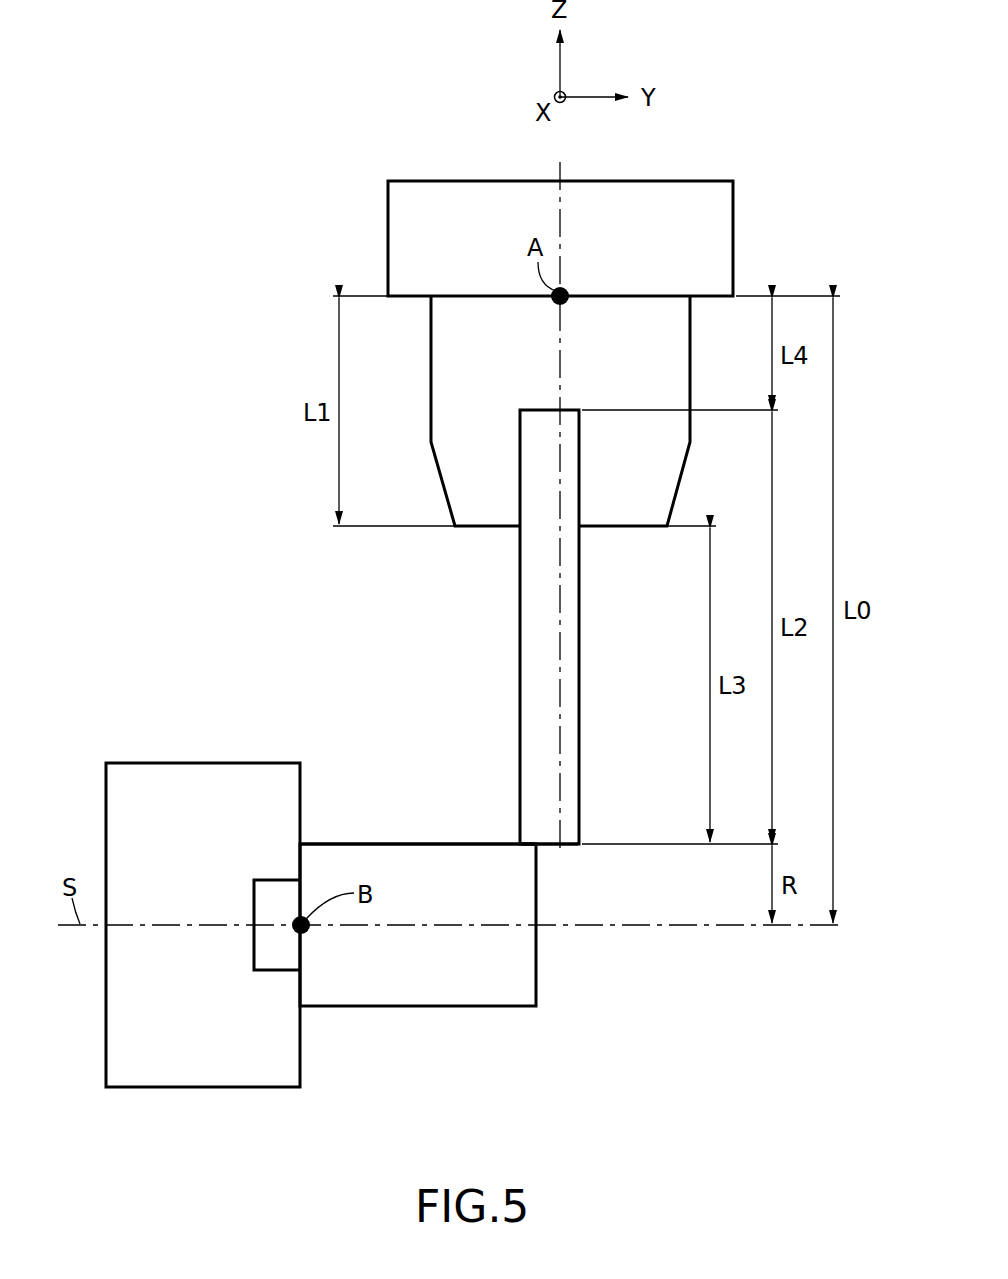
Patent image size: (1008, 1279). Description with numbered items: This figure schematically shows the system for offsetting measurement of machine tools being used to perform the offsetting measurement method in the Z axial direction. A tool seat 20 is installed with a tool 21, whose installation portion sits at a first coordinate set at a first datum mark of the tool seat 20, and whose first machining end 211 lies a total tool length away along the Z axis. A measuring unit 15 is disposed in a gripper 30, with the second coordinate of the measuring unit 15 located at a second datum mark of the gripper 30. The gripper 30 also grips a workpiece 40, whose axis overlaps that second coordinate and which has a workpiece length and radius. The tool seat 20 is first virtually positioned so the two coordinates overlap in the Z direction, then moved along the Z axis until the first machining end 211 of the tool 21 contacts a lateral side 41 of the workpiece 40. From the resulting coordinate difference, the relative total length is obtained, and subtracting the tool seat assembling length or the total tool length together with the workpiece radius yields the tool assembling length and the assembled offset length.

The tool seat 20 is at (405, 238).
The tool 21 is at (533, 689).
The first machining end 211 is at (550, 848).
The gripper 30 is at (191, 762).
The measuring unit 15 is at (265, 973).
The workpiece 40 is at (523, 973).
The lateral side 41 is at (403, 843).